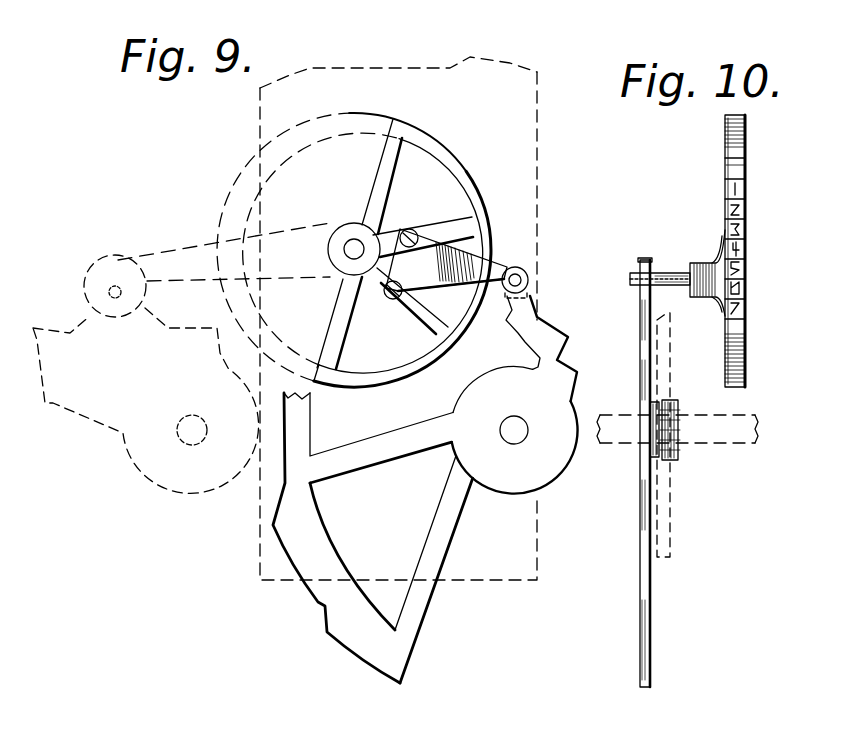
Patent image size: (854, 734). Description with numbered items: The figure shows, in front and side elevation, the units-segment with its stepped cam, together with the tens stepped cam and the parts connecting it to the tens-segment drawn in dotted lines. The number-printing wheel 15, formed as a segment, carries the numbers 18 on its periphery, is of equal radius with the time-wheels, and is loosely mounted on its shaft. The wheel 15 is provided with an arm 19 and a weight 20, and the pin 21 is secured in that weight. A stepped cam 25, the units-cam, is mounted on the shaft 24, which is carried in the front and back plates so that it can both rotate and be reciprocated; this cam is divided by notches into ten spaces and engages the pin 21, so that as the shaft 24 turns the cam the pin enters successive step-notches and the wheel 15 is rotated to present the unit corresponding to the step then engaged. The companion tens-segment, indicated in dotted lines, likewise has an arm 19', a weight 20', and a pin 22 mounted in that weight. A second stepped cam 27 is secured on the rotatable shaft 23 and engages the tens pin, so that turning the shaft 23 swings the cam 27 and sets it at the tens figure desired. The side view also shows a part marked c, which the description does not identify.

In FIG. 9, the number-printing wheel 15 is at (458, 158).
In FIG. 10, the number-printing wheel 15 is at (755, 251).
In FIG. 9, the numbers 18 is at (417, 279).
In FIG. 10, the numbers 18 is at (747, 233).
In FIG. 9, the arm 19 is at (445, 264).
In FIG. 9, the arm 19' is at (224, 253).
In FIG. 9, the weight 20 is at (541, 269).
In FIG. 10, the weight 20 is at (706, 273).
In FIG. 9, the weight 20' is at (115, 286).
In FIG. 9, the pin 21 is at (521, 281).
In FIG. 10, the pin 21 is at (660, 268).
In FIG. 9, the pin 22 is at (122, 286).
In FIG. 9, the shaft 23 is at (192, 430).
In FIG. 10, the shaft 24 is at (700, 430).
In FIG. 9, the stepped cam 25 is at (425, 489).
In FIG. 10, the stepped cam 25 is at (661, 472).
In FIG. 9, the stepped cam 27 is at (146, 400).
In FIG. 10, the guide slot c is at (671, 435).